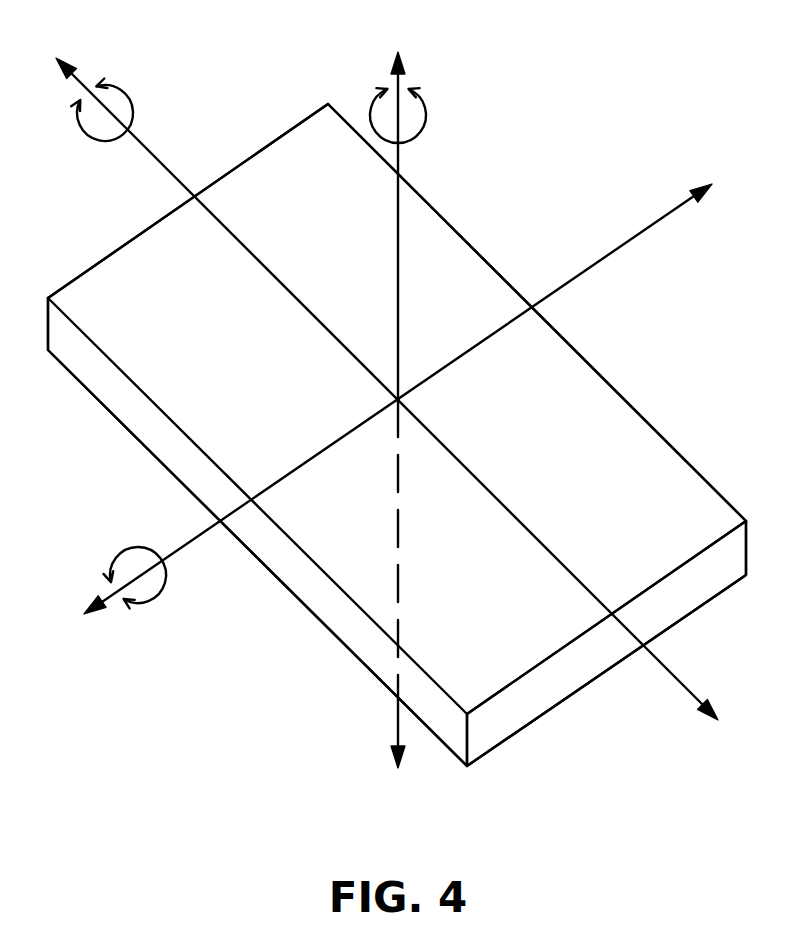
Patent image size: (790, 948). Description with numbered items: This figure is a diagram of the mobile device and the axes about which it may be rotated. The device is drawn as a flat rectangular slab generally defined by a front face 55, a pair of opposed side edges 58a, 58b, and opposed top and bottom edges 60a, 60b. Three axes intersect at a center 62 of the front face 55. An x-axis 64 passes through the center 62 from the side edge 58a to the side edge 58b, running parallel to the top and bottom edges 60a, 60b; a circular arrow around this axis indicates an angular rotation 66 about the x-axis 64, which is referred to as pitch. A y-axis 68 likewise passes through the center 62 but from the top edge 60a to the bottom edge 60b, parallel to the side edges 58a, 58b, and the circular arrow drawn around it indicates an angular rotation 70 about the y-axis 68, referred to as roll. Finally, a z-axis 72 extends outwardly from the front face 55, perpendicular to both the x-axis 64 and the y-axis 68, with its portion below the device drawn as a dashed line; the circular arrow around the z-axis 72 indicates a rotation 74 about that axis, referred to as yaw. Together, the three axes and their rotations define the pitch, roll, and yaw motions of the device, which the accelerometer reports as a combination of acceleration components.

The front face 55 is at (233, 334).
The side edge 58a is at (347, 625).
The side edge 58b is at (632, 408).
The top edge 60a is at (97, 263).
The bottom edge 60b is at (675, 602).
The center 62 is at (398, 400).
The x-axis 64 is at (193, 543).
The angular rotation 66 is at (157, 600).
The y-axis 68 is at (143, 141).
The angular rotation 70 is at (130, 97).
The z-axis 72 is at (398, 166).
The rotation 74 is at (426, 115).